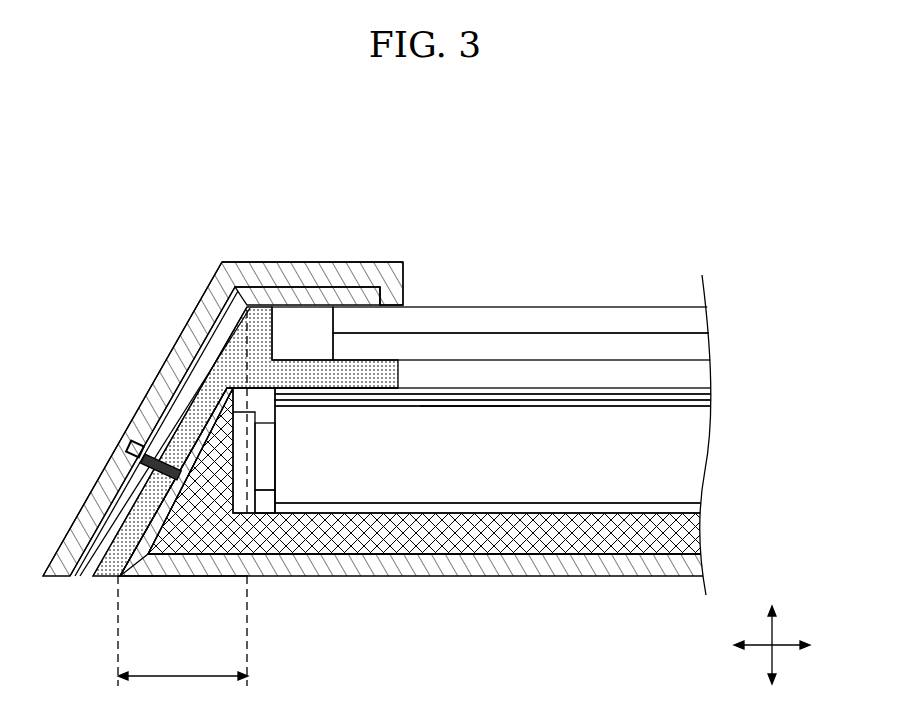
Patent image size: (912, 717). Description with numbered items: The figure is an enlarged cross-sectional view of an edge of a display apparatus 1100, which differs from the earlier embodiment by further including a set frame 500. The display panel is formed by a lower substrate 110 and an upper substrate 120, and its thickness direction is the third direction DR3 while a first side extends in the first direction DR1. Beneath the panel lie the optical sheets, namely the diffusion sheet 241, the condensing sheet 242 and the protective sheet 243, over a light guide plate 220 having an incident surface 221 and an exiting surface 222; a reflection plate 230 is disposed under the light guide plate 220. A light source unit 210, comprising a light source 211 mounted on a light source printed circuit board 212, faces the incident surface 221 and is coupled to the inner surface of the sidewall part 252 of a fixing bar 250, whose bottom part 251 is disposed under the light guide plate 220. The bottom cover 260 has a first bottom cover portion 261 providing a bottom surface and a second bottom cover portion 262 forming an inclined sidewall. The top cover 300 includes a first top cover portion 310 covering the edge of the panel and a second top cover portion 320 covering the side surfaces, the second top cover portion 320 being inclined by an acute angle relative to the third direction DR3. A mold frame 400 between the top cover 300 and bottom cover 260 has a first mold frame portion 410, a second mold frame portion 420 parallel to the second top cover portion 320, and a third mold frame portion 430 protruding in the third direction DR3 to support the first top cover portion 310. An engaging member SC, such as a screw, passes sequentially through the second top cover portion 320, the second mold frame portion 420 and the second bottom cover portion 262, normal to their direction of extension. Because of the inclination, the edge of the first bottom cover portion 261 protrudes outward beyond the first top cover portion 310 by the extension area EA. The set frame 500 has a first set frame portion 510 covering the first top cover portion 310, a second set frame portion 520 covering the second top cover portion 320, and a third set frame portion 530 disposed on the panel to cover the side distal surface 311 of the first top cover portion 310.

The display apparatus 1100 is at (642, 255).
The set frame 500 is at (195, 209).
The first set frame portion 510 is at (303, 261).
The second set frame portion 520 is at (216, 261).
The third set frame portion 530 is at (395, 261).
The side distal surface 311 is at (373, 300).
The top cover 300 is at (55, 300).
The first top cover portion 310 is at (217, 290).
The second top cover portion 320 is at (190, 327).
The mold frame 400 is at (55, 352).
The first mold frame portion 410 is at (217, 383).
The second mold frame portion 420 is at (207, 410).
The third mold frame portion 430 is at (230, 357).
The upper substrate 120 is at (703, 322).
The lower substrate 110 is at (705, 350).
The protective sheet 243 is at (706, 389).
The condensing sheet 242 is at (706, 396).
The diffusion sheet 241 is at (706, 403).
The light guide plate 220 is at (700, 455).
The exiting surface 222 is at (468, 430).
The incident surface 221 is at (276, 432).
The reflection plate 230 is at (700, 507).
The light source unit 210 is at (355, 447).
The light source 211 is at (262, 456).
The light source printed circuit board 212 is at (240, 478).
The fixing bar 250 is at (415, 636).
The bottom part 251 is at (386, 560).
The sidewall part 252 is at (273, 563).
The bottom cover 260 is at (125, 636).
The first bottom cover portion 261 is at (212, 563).
The second bottom cover portion 262 is at (140, 546).
The engaging member SC is at (128, 452).
The extension area EA is at (183, 688).
The first direction DR1 is at (793, 645).
The third direction DR3 is at (772, 633).